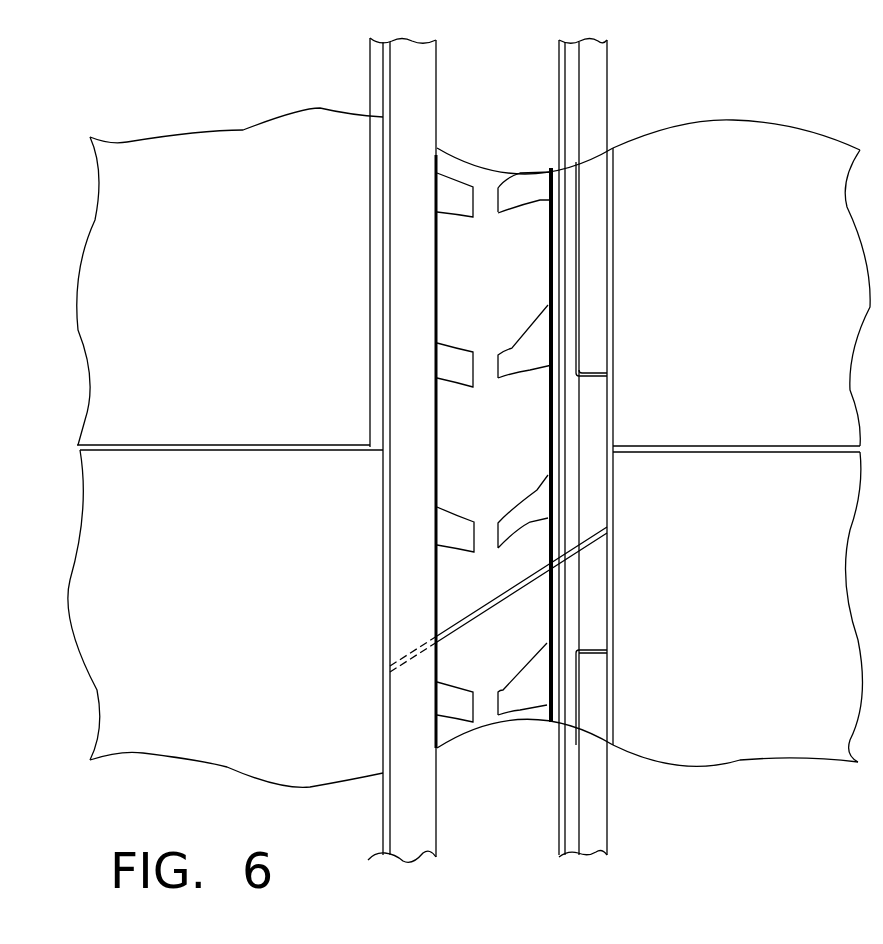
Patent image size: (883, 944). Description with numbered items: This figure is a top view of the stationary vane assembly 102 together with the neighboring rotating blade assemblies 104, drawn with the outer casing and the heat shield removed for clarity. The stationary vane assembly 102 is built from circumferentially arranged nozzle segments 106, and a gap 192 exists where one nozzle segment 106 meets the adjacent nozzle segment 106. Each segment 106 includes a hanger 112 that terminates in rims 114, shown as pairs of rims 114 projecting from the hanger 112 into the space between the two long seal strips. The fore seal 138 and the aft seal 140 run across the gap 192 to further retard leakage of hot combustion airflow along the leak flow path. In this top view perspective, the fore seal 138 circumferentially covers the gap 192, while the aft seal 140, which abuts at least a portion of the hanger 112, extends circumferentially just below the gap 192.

The stationary vane assembly 102 is at (489, 182).
The rotating blade assembly 104 is at (755, 145).
The segment 106 is at (530, 400).
The hanger 112 is at (505, 471).
The rim 114 is at (456, 356).
The fore seal 138 is at (411, 125).
The aft seal 140 is at (595, 95).
The gap 192 is at (530, 578).